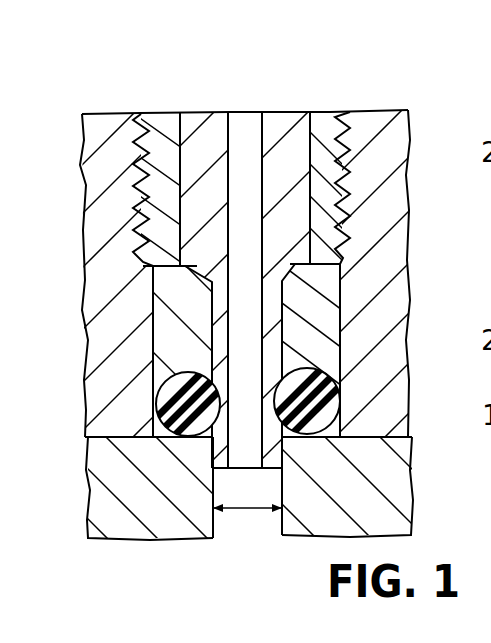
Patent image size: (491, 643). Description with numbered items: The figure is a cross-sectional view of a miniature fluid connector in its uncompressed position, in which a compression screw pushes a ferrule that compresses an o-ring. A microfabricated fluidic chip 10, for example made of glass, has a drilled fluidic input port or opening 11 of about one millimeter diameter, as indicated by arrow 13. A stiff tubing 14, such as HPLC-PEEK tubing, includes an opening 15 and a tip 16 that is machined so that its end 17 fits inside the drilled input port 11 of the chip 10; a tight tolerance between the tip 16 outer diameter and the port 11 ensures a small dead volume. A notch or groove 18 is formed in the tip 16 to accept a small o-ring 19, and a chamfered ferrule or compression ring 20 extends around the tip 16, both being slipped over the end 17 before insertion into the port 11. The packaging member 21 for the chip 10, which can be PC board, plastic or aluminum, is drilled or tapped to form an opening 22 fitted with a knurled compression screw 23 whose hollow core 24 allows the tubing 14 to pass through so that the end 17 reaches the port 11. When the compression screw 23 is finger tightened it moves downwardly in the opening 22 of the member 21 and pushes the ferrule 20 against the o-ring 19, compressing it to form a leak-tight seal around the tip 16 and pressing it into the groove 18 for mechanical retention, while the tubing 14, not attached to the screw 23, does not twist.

The fluidic chip 10 is at (88, 482).
The input port or opening 11 is at (215, 497).
The arrow 13 is at (258, 511).
The stiff tubing 14 is at (292, 112).
The tubing opening 15 is at (242, 140).
The tubing tip 16 is at (270, 301).
The end of tip 17 is at (273, 472).
The notch or groove 18 is at (224, 400).
The o-ring 19 is at (185, 406).
The chamfered ferrule or compression ring 20 is at (170, 330).
The packaging member 21 is at (80, 167).
The opening 22 is at (343, 113).
The knurled compression screw 23 is at (153, 113).
The hollow core 24 is at (178, 113).